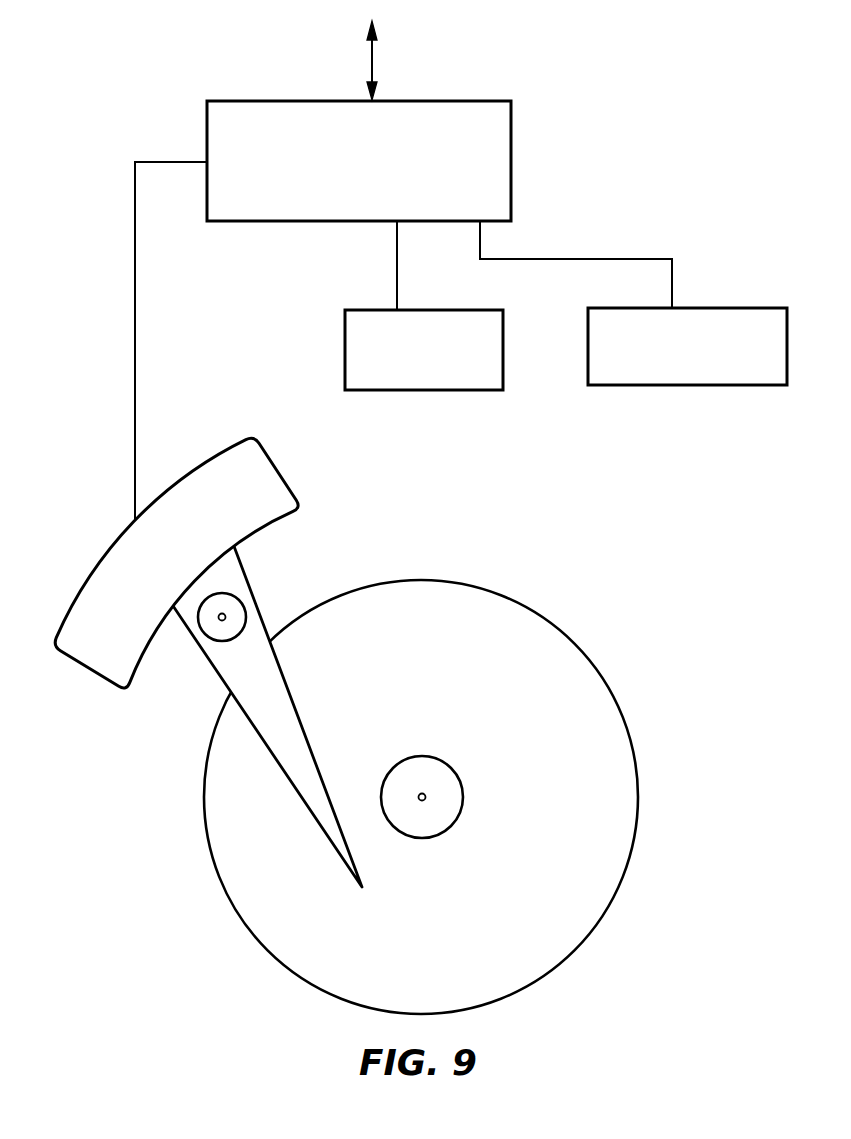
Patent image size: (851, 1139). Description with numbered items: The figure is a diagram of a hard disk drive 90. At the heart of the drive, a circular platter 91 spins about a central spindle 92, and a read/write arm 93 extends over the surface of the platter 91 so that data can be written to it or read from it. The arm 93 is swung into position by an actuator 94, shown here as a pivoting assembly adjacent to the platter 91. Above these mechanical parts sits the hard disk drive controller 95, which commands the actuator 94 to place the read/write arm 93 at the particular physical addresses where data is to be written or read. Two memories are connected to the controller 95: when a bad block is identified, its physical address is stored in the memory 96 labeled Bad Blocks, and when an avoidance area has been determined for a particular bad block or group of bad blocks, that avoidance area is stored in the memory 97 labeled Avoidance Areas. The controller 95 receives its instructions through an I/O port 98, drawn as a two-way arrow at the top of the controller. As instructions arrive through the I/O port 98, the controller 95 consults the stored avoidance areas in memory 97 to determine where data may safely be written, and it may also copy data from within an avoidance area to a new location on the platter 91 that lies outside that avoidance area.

The hard disk drive 90 is at (78, 121).
The circular platter 91 is at (613, 688).
The spindle 92 is at (455, 768).
The read/write arm 93 is at (313, 753).
The actuator 94 is at (279, 466).
The hard disk drive controller 95 is at (476, 100).
The memory 96 is at (493, 391).
The memory 97 is at (753, 308).
The I/O port 98 is at (372, 68).